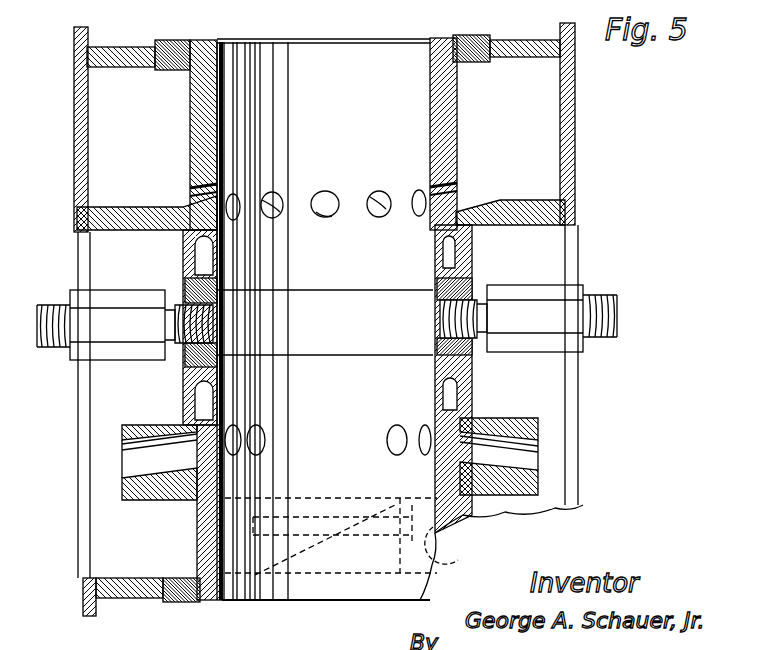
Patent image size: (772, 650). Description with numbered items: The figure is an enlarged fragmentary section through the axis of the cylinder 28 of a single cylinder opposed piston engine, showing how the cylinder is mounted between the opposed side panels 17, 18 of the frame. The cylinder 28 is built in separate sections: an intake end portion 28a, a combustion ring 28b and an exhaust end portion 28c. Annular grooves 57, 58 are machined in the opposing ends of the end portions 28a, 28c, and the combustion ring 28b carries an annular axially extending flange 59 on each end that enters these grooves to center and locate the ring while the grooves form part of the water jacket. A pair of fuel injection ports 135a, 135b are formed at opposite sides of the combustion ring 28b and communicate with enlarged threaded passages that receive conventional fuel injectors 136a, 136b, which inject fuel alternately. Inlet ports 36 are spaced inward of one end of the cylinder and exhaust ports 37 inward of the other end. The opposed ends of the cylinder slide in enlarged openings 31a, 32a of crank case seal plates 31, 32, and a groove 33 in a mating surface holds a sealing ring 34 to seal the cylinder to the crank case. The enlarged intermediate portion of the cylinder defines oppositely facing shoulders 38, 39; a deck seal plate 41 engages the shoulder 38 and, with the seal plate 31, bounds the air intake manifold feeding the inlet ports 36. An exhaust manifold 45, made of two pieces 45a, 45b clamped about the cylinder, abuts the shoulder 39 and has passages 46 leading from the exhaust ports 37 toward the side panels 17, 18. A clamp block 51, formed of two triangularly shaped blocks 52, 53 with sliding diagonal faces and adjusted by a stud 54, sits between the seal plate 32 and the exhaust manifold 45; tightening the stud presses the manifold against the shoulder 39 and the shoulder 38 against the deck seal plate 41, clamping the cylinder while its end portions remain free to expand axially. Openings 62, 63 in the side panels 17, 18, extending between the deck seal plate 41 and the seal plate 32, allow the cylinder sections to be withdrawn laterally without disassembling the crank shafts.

The side panel 17 is at (75, 148).
The side panel 18 is at (576, 147).
The cylinder 28 is at (478, 272).
The intake end portion 28a is at (455, 118).
The combustion ring 28b is at (436, 298).
The exhaust end portion 28c is at (473, 404).
The crank case seal plate 31 is at (506, 40).
The enlarged opening 31a is at (190, 42).
The crank case seal plate 32 is at (115, 582).
The enlarged opening 32a is at (205, 603).
The groove 33 is at (186, 62).
The sealing ring 34 is at (470, 38).
The inlet ports 36 is at (357, 176).
The exhaust ports 37 is at (262, 445).
The shoulder 38 is at (186, 229).
The shoulder 39 is at (188, 432).
The deck seal plate 41 is at (116, 218).
The exhaust manifold 45 is at (544, 437).
The exhaust manifold piece 45a is at (540, 428).
The exhaust manifold piece 45b is at (122, 436).
The passages 46 is at (510, 447).
The clamp block 51 is at (325, 575).
The triangularly shaped block 52 is at (308, 512).
The triangularly shaped block 53 is at (373, 563).
The stud 54 is at (448, 545).
The annular groove 57 is at (462, 251).
The annular groove 58 is at (457, 382).
The annular axially extending flange 59 is at (436, 278).
The opening 62 is at (82, 248).
The opening 63 is at (572, 275).
The fuel injection port 135a is at (217, 324).
The fuel injection port 135b is at (440, 324).
The fuel injector 136a is at (104, 300).
The fuel injector 136b is at (568, 342).